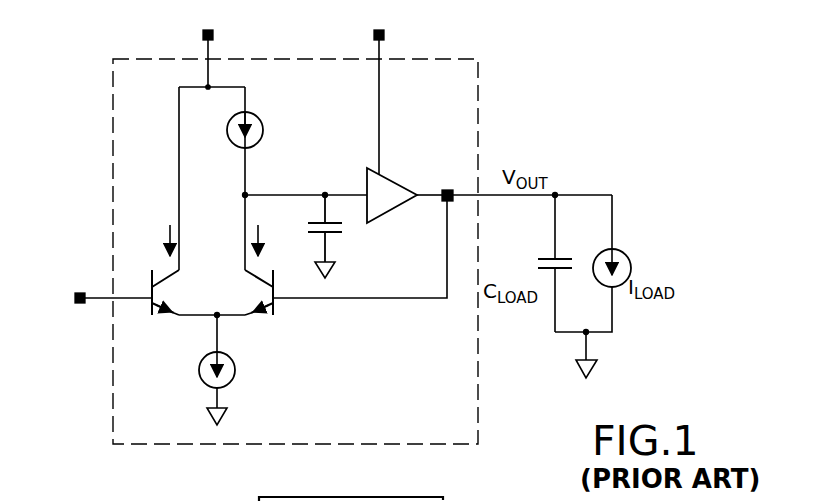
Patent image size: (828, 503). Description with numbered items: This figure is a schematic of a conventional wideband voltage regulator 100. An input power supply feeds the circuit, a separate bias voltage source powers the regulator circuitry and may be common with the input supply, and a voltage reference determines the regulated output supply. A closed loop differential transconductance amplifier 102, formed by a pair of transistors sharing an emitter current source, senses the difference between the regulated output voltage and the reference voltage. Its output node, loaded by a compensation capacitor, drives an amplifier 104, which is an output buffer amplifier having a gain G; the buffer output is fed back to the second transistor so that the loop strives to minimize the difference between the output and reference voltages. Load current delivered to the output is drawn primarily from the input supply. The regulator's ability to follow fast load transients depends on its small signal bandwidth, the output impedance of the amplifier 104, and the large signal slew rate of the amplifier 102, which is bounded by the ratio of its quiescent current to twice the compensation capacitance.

The wideband voltage regulator 100 is at (508, 95).
The closed loop differential transconductance amplifier 102 is at (272, 331).
The amplifier 104 is at (394, 185).